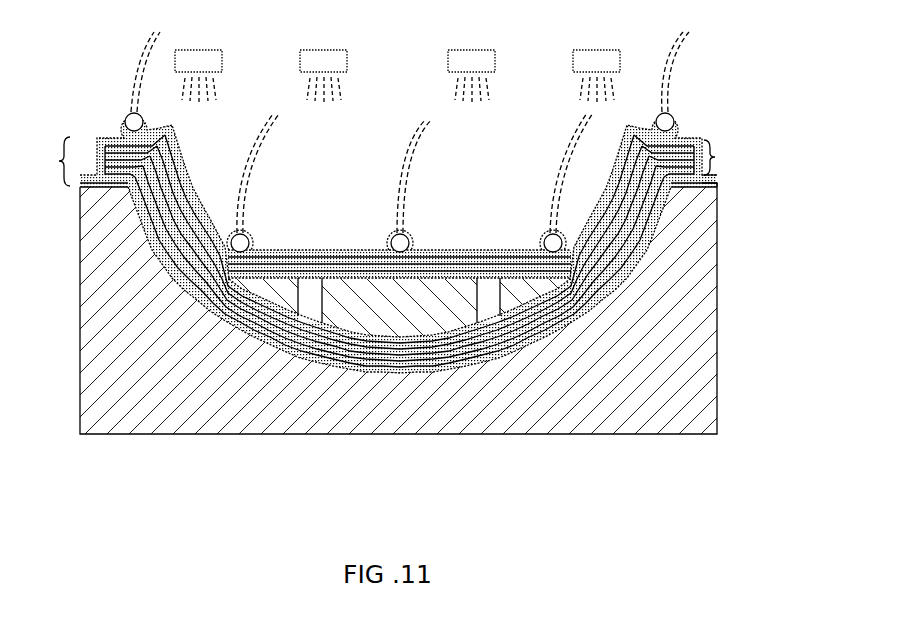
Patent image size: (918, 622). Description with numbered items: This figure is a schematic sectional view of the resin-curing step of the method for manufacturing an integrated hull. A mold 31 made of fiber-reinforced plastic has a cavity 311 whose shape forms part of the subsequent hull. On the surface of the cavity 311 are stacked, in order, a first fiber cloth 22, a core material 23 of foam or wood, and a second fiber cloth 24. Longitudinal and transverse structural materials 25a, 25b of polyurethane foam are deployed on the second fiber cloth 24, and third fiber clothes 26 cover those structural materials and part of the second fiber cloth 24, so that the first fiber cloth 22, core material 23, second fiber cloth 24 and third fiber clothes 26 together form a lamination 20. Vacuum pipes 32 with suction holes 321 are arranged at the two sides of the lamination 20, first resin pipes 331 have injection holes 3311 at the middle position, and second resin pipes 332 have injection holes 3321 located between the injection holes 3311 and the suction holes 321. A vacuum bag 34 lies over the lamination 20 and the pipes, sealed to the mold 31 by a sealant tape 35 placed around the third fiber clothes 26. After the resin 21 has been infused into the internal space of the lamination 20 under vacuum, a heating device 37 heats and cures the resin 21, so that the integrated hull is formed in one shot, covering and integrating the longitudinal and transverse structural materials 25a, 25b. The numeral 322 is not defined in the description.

The mold 31 is at (165, 400).
The lamination 20 is at (97, 160).
The third fiber clothes 26 is at (687, 159).
The vacuum bag 34 is at (718, 173).
The sealant tape 35 is at (718, 182).
The vacuum pipes 32 is at (144, 58).
The suction holes 321 is at (127, 114).
The wire 322 is at (256, 147).
The first resin pipes 331 is at (397, 135).
The injection holes of the first resin pipes 3311 is at (389, 236).
The second resin pipes 332 is at (556, 135).
The injection holes of the second resin pipes 3321 is at (546, 234).
The heating device 37 is at (457, 50).
The first fiber cloth 22 is at (312, 310).
The longitudinal structural material 25a is at (330, 360).
The cavity 311 is at (392, 375).
The transverse structural material 25b is at (430, 312).
The core material 23 is at (473, 340).
The resin 21 is at (533, 330).
The second fiber cloth 24 is at (565, 283).